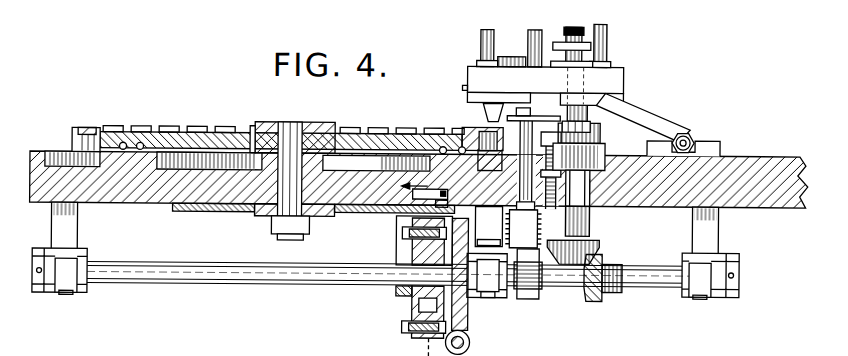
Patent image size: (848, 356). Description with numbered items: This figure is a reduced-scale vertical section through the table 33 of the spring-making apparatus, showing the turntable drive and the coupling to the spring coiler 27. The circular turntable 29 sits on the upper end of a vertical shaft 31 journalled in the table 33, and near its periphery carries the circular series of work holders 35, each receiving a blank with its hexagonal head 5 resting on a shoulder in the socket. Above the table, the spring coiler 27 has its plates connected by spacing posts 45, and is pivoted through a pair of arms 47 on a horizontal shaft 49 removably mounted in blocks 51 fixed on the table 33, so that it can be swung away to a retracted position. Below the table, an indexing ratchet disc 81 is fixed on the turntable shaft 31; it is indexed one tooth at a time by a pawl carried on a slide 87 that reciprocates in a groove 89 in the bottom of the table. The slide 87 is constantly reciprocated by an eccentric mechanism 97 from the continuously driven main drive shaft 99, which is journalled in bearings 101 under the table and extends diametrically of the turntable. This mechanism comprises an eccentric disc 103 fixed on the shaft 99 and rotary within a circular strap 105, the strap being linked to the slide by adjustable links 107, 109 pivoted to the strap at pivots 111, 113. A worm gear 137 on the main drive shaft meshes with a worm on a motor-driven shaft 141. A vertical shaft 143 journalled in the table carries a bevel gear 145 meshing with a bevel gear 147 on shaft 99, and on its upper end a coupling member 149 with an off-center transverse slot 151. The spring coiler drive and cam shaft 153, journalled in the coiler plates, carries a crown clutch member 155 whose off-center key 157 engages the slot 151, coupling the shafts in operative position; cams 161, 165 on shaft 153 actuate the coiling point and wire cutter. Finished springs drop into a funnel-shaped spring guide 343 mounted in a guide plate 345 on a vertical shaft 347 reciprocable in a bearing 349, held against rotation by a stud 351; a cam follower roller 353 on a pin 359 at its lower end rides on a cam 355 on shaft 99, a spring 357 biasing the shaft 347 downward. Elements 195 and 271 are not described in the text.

The hexagonal head 5 is at (406, 186).
The spring coiler 27 is at (467, 76).
The circular turntable 29 is at (186, 128).
The vertical shaft 31 is at (288, 121).
The table 33 is at (134, 192).
The work holders 35 is at (146, 124).
The spacing posts 45 is at (481, 33).
The arms 47 is at (640, 116).
The horizontal shaft 49 is at (695, 131).
The blocks 51 is at (721, 146).
The indexing ratchet disc 81 is at (209, 211).
The slide 87 is at (442, 201).
The groove 89 is at (412, 217).
The eccentric mechanism 97 is at (379, 290).
The main drive shaft 99 is at (228, 275).
The bearings 101 is at (72, 233).
The eccentric disc 103 is at (410, 286).
The circular strap 105 is at (413, 298).
The adjustable link 107 is at (415, 241).
The adjustable link 109 is at (430, 336).
The pivot 111 is at (408, 230).
The pivot 113 is at (406, 324).
The worm gear 137 is at (464, 310).
The shaft 141 is at (471, 339).
The vertical shaft 143 is at (590, 215).
The bevel gear 145 is at (592, 243).
The bevel gear 147 is at (598, 292).
The clutch or coupling member 149 is at (598, 157).
The off-center transverse slot 151 is at (598, 150).
The spring coiler drive and cam shaft 153 is at (566, 29).
The crown clutch or coupling member 155 is at (585, 123).
The off-center key 157 is at (578, 168).
The cam 161 is at (592, 60).
The cam 165 is at (590, 44).
The bolt 195 is at (529, 36).
The spacer 271 is at (518, 56).
The funnel-shaped spring guide 343 is at (482, 108).
The guide plate 345 is at (482, 116).
The vertical shaft 347 is at (520, 181).
The bearing 349 is at (520, 195).
The stud 351 is at (550, 110).
The cam follower roller 353 is at (538, 220).
The cam 355 is at (524, 288).
The spring 357 is at (510, 222).
The pin 359 is at (512, 240).